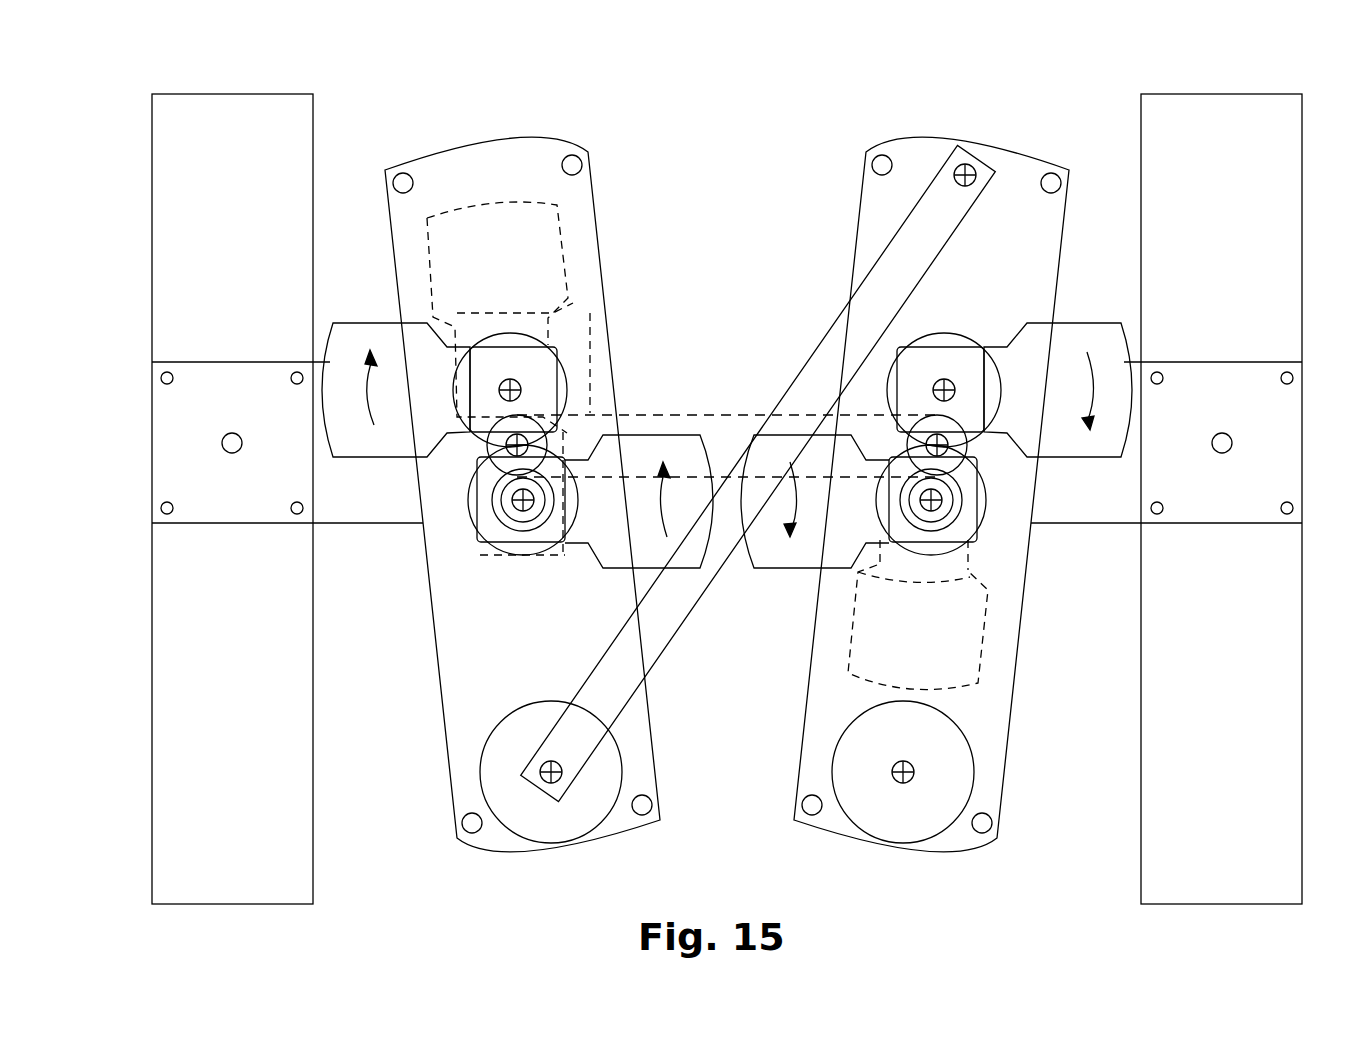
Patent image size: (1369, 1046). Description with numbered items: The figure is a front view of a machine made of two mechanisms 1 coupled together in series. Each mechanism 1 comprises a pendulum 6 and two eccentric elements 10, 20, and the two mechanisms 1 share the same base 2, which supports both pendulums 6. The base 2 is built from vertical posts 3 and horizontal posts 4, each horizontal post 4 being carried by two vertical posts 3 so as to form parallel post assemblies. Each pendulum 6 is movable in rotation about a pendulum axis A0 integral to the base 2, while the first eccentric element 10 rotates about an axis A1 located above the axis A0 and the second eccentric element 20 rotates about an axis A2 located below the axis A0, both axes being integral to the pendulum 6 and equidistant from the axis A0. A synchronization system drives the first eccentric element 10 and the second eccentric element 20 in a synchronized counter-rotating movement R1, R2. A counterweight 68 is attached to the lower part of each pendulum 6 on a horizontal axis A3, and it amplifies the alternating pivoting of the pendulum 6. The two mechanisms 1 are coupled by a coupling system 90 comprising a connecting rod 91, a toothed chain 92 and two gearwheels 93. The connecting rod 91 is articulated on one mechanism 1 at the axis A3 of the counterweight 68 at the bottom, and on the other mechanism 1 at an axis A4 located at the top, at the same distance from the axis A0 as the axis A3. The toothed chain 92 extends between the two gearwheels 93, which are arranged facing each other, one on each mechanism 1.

The mechanism 1 is at (622, 147).
The base 2 is at (100, 328).
The vertical post 3 is at (178, 573).
The horizontal post 4 is at (366, 500).
The pendulum 6 is at (583, 254).
The first eccentric element 10 is at (360, 342).
The second eccentric element 20 is at (618, 552).
The counterweight 68 is at (580, 808).
The coupling system 90 is at (735, 262).
The connecting rod 91 is at (652, 650).
The toothed chain 92 is at (682, 413).
The gearwheel 93 is at (510, 465).
The pendulum axis A0 is at (516, 447).
The axis of rotation of first eccentric element A1 is at (510, 388).
The axis of rotation of second eccentric element A2 is at (523, 502).
The counterweight axis A3 is at (551, 774).
The upper articulation axis A4 is at (965, 175).
The rotational movement of first eccentric element R1 is at (728, 390).
The rotational movement of second eccentric element R2 is at (727, 499).